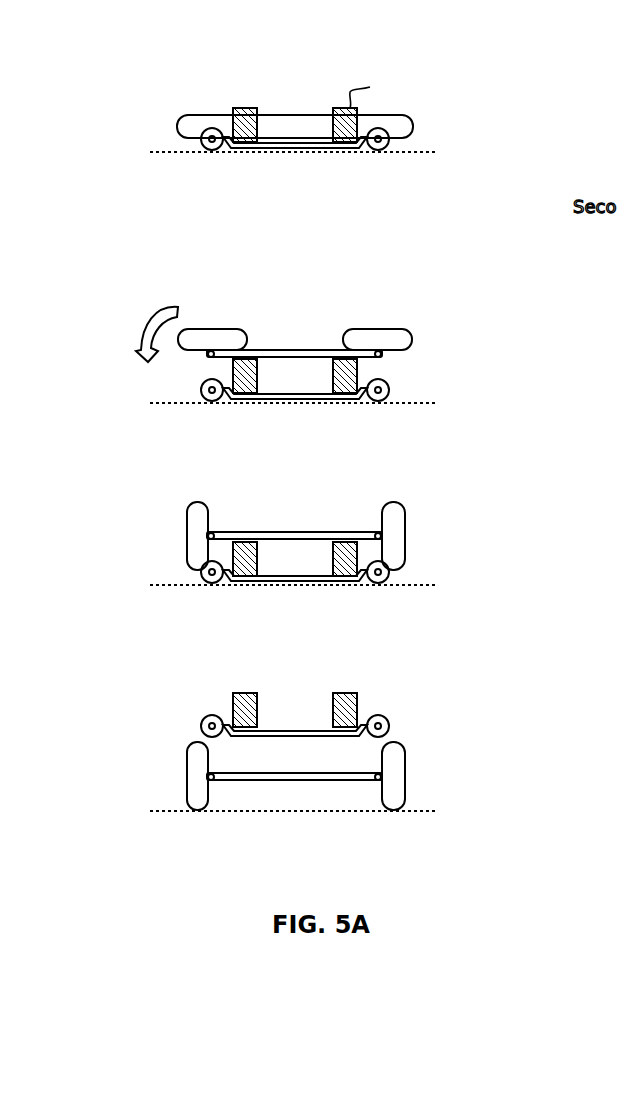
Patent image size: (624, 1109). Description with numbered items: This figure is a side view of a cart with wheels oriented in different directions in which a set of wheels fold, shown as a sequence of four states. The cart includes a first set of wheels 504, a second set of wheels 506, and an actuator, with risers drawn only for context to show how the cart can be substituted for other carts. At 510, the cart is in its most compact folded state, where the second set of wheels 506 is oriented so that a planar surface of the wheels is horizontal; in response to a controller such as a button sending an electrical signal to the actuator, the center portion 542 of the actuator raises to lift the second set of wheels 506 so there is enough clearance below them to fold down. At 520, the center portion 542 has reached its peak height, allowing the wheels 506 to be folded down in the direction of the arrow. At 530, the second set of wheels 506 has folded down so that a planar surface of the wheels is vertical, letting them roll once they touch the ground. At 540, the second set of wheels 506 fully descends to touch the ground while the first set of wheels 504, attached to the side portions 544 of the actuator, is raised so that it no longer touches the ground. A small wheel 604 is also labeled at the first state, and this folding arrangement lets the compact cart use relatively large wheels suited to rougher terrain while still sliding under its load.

The raising a set of wheels 510 is at (122, 24).
The folding a set of wheels 520 is at (115, 255).
The lowering the set of wheels 530 is at (122, 485).
The wheels touch the ground 540 is at (122, 699).
The first set of wheels 504 is at (389, 722).
The second set of wheels 506 is at (197, 115).
The center portion of the actuator 542 is at (287, 137).
The side portions of the actuator 544 is at (302, 399).
The wheel 604 is at (387, 148).